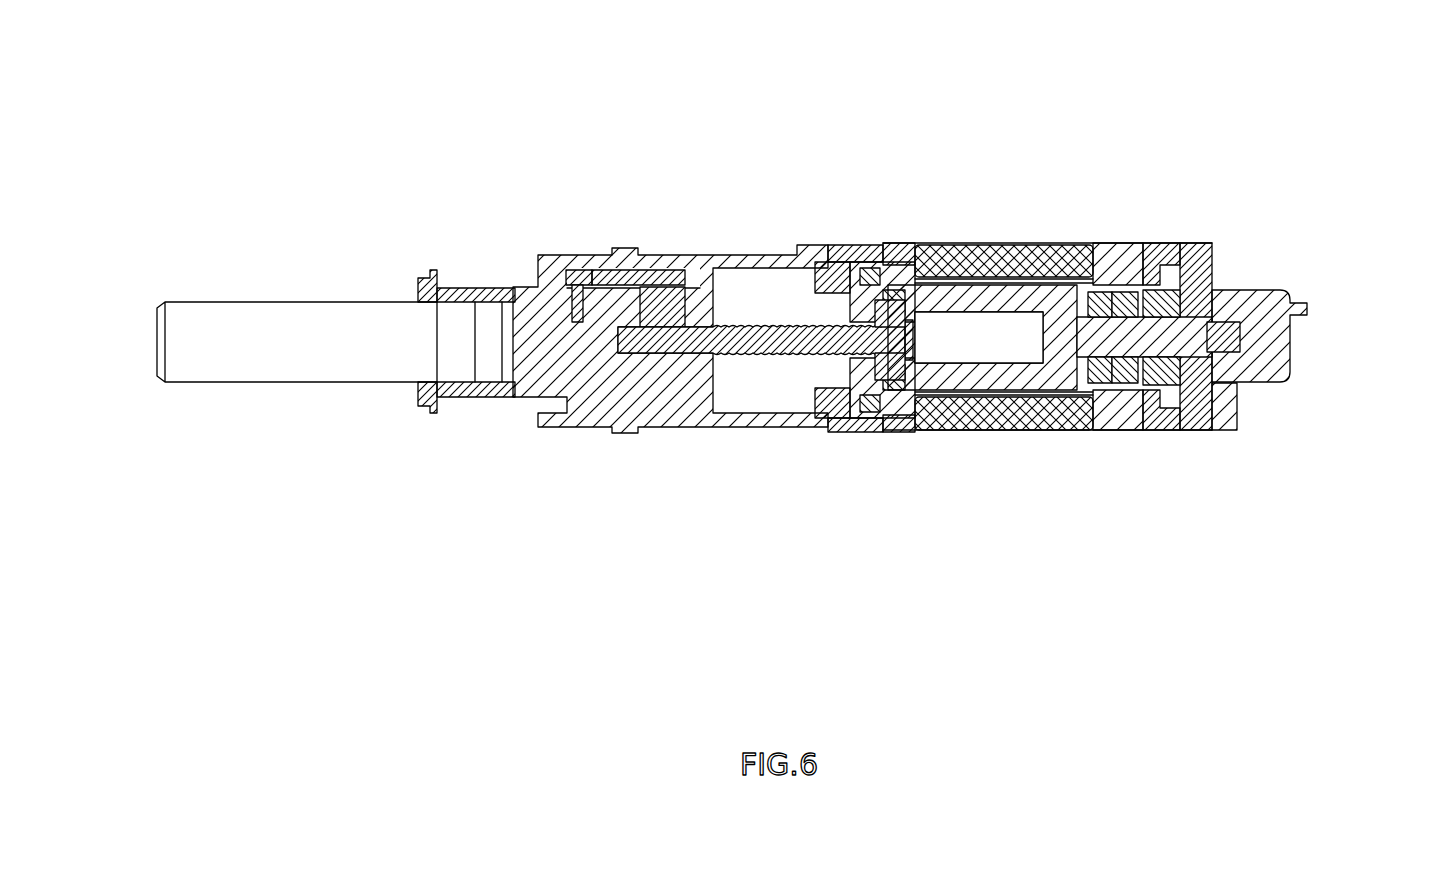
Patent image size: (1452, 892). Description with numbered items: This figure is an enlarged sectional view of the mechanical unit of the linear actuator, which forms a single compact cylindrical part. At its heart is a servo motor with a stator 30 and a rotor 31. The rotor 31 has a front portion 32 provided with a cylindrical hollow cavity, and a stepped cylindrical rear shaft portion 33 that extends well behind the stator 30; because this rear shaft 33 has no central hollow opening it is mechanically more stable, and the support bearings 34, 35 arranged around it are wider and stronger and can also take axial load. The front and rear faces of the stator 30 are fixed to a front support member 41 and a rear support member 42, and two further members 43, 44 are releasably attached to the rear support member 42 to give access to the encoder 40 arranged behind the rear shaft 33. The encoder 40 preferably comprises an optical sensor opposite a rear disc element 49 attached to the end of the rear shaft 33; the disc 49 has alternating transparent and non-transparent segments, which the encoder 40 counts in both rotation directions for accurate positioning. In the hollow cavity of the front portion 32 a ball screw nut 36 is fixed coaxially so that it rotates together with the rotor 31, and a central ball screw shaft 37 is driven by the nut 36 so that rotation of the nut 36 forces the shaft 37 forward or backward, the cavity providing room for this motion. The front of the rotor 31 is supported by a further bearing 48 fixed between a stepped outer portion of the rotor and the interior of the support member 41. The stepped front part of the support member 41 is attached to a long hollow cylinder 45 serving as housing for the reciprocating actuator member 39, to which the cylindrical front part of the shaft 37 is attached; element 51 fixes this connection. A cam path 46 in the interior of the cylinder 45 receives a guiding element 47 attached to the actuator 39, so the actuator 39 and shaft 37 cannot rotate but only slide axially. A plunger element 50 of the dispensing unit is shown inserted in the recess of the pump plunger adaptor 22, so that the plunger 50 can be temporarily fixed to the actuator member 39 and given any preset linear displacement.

The plunger element 50 is at (237, 362).
The pump plunger adaptor 22 is at (430, 397).
The actuator member 39 is at (588, 355).
The guiding element 47 is at (567, 283).
The cam path 46 is at (647, 275).
The fixing element 51 is at (673, 312).
The ball screw nut 36 is at (833, 367).
The long hollow cylinder 45 is at (813, 256).
The front support member 41 is at (912, 250).
The bearing 48 is at (870, 405).
The front portion 32 is at (880, 375).
The ball screw shaft 37 is at (872, 342).
The stator 30 is at (927, 423).
The rotor 31 is at (1017, 382).
The rear support member 42 is at (1115, 250).
The further member 43 is at (1160, 245).
The further member 44 is at (1203, 245).
The encoder 40 is at (1270, 340).
The rear disc element 49 is at (1230, 333).
The rear shaft portion 33 is at (1160, 337).
The support bearing 34 is at (1100, 375).
The support bearing 35 is at (1125, 370).